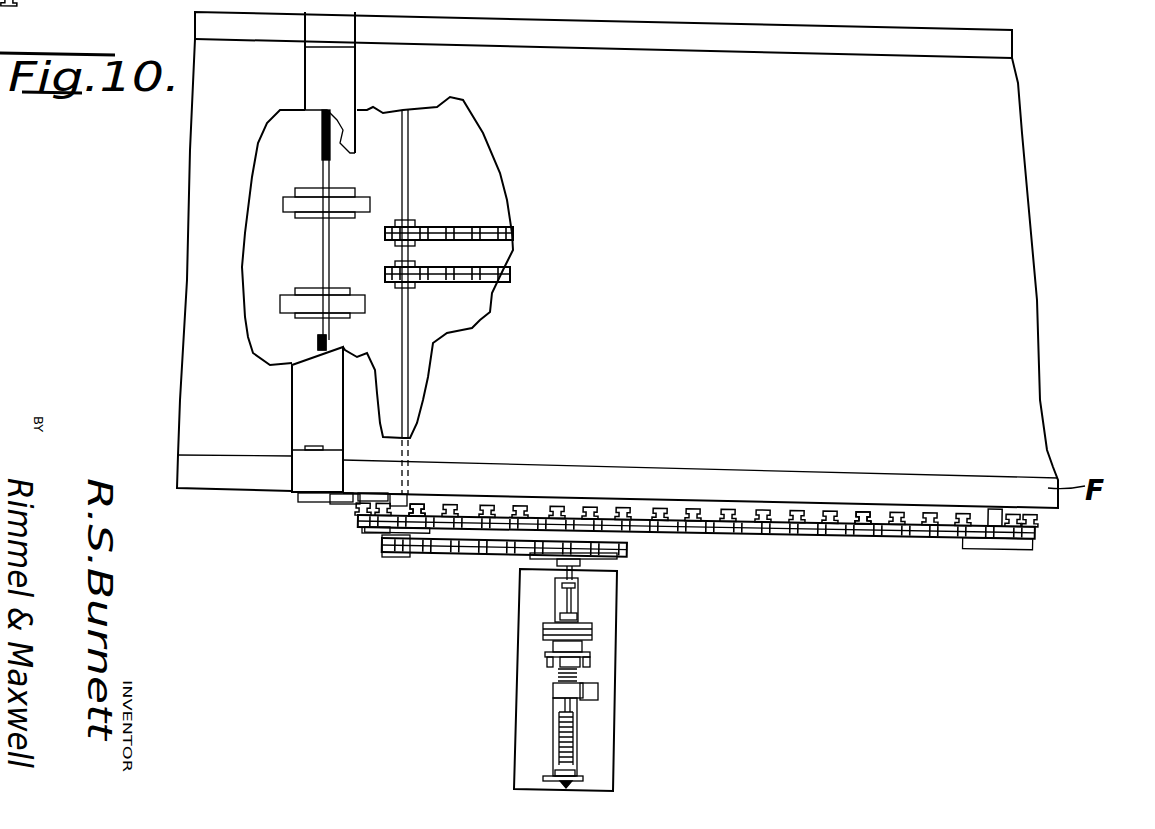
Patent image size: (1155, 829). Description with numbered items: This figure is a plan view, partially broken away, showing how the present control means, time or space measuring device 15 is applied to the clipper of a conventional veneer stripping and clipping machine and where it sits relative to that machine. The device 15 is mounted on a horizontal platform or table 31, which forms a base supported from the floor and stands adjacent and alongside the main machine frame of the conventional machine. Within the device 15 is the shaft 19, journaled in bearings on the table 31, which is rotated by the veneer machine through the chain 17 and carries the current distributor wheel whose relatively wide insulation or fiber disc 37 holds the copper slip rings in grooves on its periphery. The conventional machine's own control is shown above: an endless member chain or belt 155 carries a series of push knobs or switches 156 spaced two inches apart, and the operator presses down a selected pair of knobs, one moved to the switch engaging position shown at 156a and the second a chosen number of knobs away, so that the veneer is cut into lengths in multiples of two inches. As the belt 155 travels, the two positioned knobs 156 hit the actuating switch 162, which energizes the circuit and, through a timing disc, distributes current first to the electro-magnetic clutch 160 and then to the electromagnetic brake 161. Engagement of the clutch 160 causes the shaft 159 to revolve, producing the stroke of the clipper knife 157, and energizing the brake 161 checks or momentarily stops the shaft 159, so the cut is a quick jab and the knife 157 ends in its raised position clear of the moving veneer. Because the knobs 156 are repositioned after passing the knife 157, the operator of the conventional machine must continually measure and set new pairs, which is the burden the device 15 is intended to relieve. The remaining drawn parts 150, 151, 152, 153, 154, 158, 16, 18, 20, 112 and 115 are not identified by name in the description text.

The frame body 150 is at (1015, 133).
The gear 151 is at (449, 267).
The shaft upper portion 152 is at (413, 217).
The shaft lower portion 153 is at (407, 312).
The rack end flange 154 is at (368, 535).
The endless member chain or belt 155 is at (797, 528).
The push knobs or switches 156 is at (557, 498).
The knob in switch engaging position 156a is at (420, 497).
The clipper knife 157 is at (317, 343).
The support column 158 is at (277, 270).
The shaft 159 is at (323, 267).
The electro-magnetic clutch 160 is at (292, 200).
The electromagnetic brake 161 is at (280, 305).
The actuating switch 162 is at (318, 507).
The control means, time or space measuring device 15 is at (618, 657).
The rack end block 16 is at (398, 558).
The chain 17 is at (463, 553).
The bracket 18 is at (607, 560).
The shaft 19 is at (572, 605).
The stem 20 is at (558, 573).
The insulation or fiber disc or cylinder 37 is at (590, 632).
The threaded rod 112 is at (570, 730).
The platform or table 31 is at (600, 736).
The base plate 115 is at (582, 773).